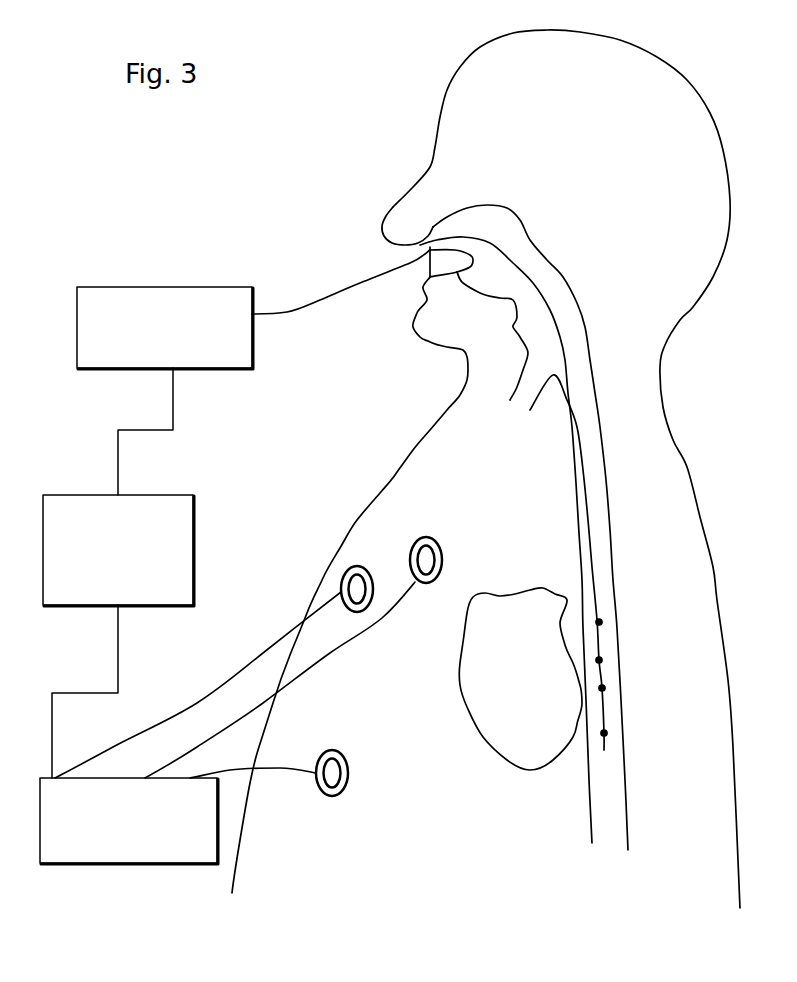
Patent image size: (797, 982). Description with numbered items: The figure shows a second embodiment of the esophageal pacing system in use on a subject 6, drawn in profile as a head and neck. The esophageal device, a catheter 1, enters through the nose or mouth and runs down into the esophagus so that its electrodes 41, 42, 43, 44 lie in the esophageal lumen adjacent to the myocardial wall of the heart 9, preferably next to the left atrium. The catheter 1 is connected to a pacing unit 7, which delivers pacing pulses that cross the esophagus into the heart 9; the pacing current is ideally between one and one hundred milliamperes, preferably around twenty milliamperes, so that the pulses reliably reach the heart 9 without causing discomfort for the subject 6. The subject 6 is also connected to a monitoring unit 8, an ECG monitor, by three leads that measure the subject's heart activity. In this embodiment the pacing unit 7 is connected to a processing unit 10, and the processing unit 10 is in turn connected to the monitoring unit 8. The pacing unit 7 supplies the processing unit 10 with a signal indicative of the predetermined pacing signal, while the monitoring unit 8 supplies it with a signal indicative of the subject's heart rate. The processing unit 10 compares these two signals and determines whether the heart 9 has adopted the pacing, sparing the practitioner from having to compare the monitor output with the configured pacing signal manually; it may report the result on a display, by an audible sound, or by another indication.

The catheter 1 is at (318, 319).
The subject 6 is at (636, 84).
The pacing unit 7 is at (165, 328).
The monitoring unit 8 is at (129, 821).
The heart 9 is at (520, 679).
The processing unit 10 is at (118, 550).
The electrode 41 is at (607, 733).
The electrode 42 is at (605, 688).
The electrode 43 is at (602, 660).
The electrode 44 is at (602, 622).